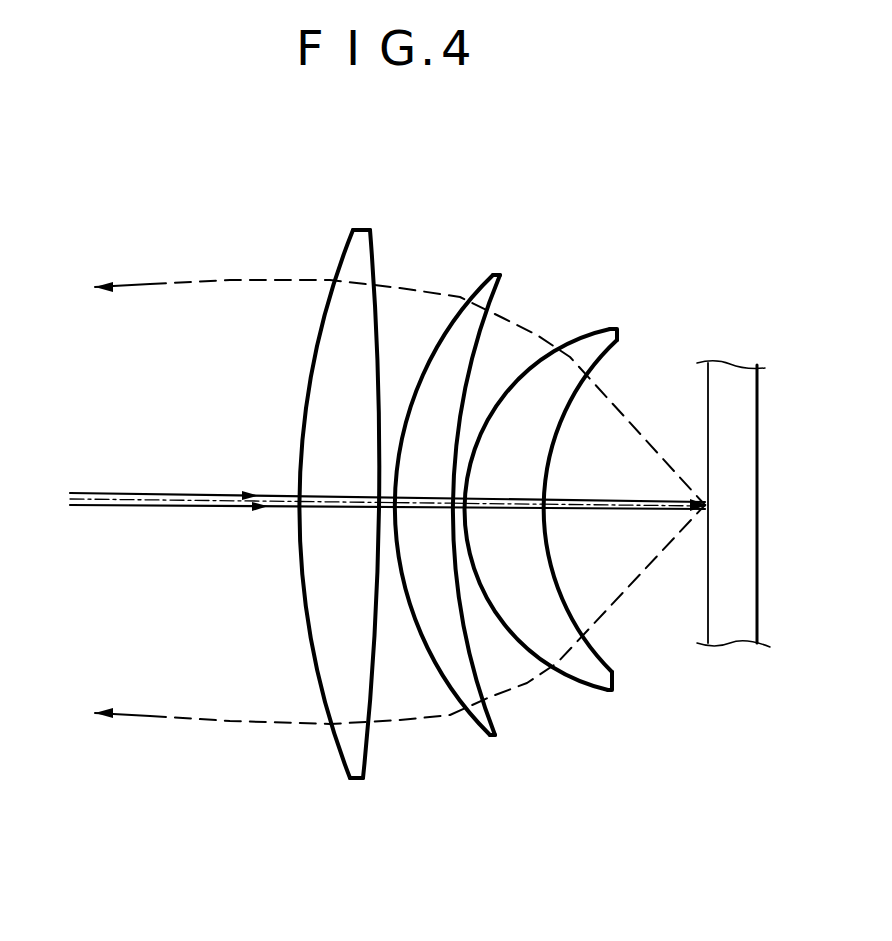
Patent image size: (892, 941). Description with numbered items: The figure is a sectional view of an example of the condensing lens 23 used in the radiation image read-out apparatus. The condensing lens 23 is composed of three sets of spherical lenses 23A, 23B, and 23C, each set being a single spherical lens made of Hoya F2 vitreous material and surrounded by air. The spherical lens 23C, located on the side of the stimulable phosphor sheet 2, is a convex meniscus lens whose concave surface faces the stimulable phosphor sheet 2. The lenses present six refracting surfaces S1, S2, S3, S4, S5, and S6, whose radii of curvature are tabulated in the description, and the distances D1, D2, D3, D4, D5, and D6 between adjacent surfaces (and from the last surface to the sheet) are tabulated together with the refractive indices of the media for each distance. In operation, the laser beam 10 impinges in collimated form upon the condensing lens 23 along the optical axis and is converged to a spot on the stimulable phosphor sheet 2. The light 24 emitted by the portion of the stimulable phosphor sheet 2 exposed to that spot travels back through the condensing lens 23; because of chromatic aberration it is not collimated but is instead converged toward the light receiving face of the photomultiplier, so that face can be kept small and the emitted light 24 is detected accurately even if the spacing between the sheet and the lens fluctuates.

The stimulable phosphor sheet 2 is at (740, 455).
The laser beam 10 is at (235, 507).
The condensing lens 23 is at (479, 459).
The spherical lens 23A is at (367, 502).
The spherical lens 23B is at (473, 495).
The spherical lens 23C is at (570, 508).
The light 24 is at (222, 278).
The distance D1 is at (349, 500).
The distance D2 is at (383, 498).
The distance D3 is at (427, 500).
The distance D4 is at (458, 500).
The distance D5 is at (502, 505).
The distance D6 is at (592, 503).
The surface S1 is at (342, 758).
The surface S2 is at (370, 750).
The surface S3 is at (470, 727).
The surface S4 is at (497, 716).
The surface S5 is at (590, 683).
The surface S6 is at (600, 653).